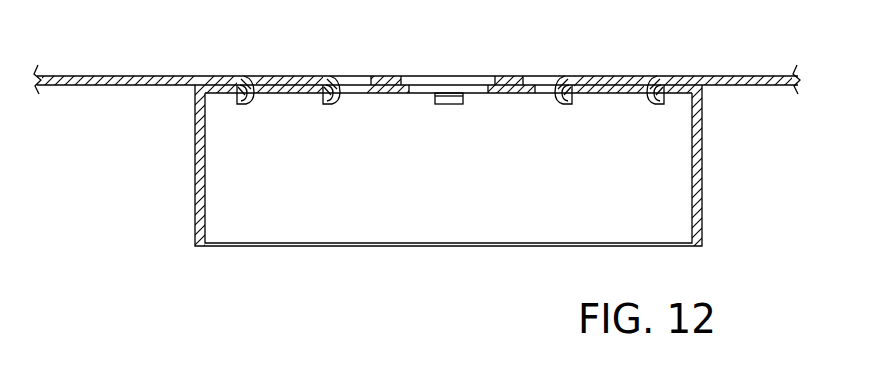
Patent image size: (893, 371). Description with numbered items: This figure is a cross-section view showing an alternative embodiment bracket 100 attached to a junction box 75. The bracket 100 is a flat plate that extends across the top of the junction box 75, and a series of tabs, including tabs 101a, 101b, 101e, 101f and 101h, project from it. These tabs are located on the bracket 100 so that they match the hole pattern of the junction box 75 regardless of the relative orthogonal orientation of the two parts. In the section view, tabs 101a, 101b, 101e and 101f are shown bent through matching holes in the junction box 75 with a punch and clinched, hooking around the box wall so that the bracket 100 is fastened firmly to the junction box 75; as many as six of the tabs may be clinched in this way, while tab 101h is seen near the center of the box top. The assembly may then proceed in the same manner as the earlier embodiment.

The bracket 100 is at (92, 76).
The junction box 75 is at (195, 148).
The tab 101a is at (658, 107).
The tab 101b is at (572, 107).
The tab 101e is at (330, 105).
The tab 101f is at (247, 105).
The tab 101h is at (446, 105).